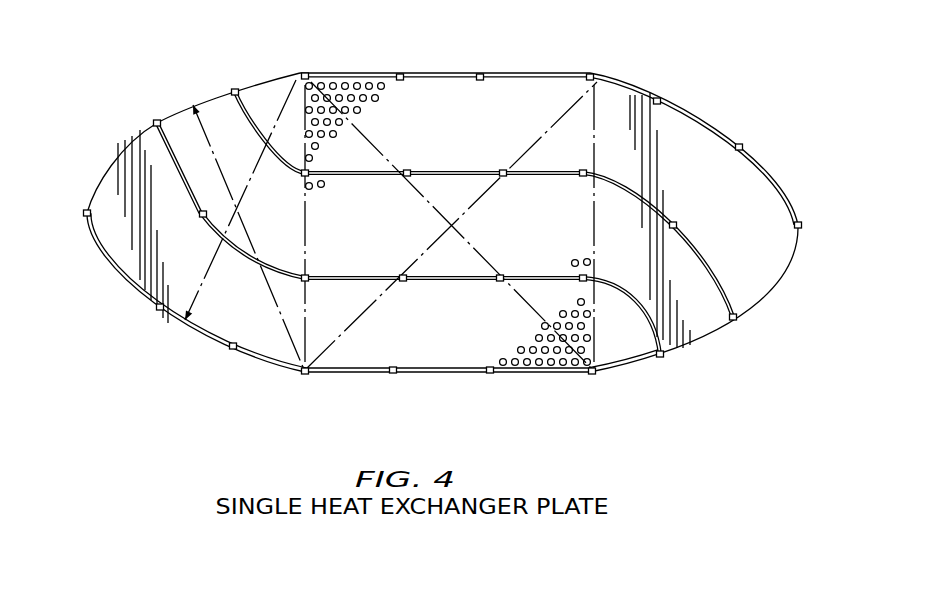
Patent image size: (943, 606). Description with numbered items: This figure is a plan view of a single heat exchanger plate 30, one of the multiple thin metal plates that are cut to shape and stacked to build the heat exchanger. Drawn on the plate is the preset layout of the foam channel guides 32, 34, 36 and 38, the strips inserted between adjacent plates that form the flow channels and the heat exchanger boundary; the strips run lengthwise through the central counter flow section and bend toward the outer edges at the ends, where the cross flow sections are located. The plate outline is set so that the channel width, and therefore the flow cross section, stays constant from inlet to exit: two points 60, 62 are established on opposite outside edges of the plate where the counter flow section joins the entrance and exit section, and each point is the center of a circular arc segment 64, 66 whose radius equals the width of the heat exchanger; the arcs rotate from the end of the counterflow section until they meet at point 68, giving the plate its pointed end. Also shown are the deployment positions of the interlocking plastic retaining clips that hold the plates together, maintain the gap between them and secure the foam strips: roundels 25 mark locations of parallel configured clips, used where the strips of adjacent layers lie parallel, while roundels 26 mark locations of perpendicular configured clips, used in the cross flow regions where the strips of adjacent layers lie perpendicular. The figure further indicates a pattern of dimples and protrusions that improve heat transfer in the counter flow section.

The roundel 25 is at (318, 76).
The roundel 26 is at (237, 90).
The metal plate 30 is at (697, 345).
The foam channel guide 32 is at (443, 374).
The foam channel guide 34 is at (650, 333).
The foam channel guide 36 is at (728, 318).
The foam channel guide 38 is at (766, 162).
The point 60 is at (306, 73).
The point 62 is at (305, 374).
The circular arc segment 64 is at (210, 92).
The circular arc segment 66 is at (190, 340).
The point 68 is at (86, 214).